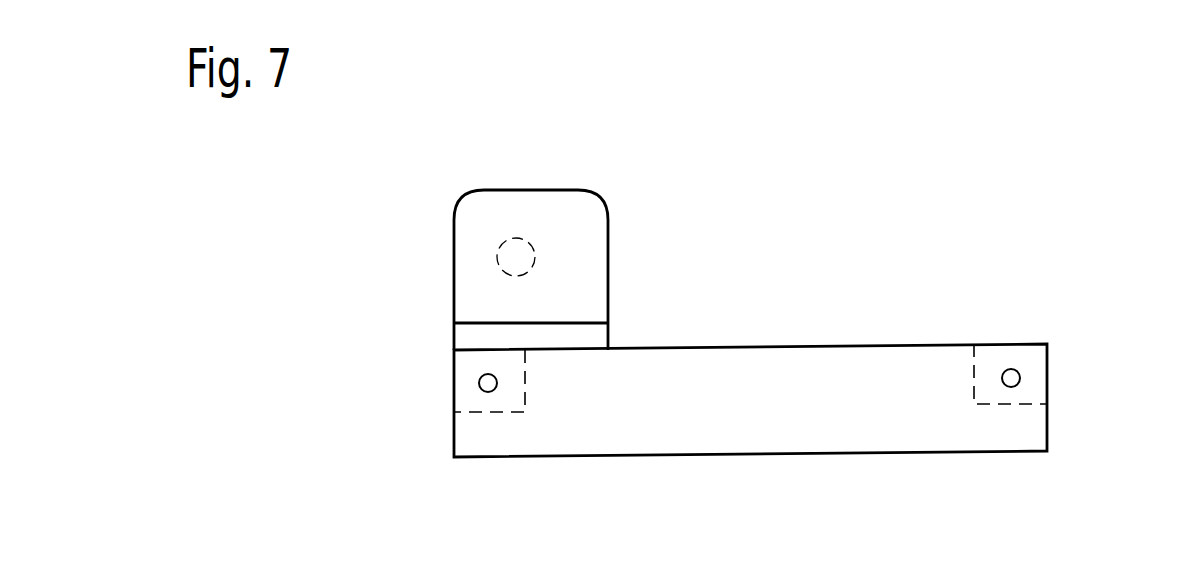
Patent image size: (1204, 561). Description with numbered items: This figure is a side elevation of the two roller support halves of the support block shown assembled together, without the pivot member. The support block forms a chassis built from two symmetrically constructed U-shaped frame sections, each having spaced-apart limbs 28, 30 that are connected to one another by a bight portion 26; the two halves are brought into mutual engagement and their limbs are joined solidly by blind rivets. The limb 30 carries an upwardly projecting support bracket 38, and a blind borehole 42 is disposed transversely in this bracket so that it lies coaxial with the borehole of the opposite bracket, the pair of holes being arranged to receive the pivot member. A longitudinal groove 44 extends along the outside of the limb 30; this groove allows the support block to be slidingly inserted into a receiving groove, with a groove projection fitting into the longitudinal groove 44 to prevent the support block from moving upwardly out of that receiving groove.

The bight portion 26 is at (723, 377).
The U-limb 28 is at (1008, 410).
The U-limb 30 is at (468, 413).
The support bracket 38 is at (487, 210).
The blind borehole 42 is at (528, 244).
The longitudinal groove 44 is at (470, 325).